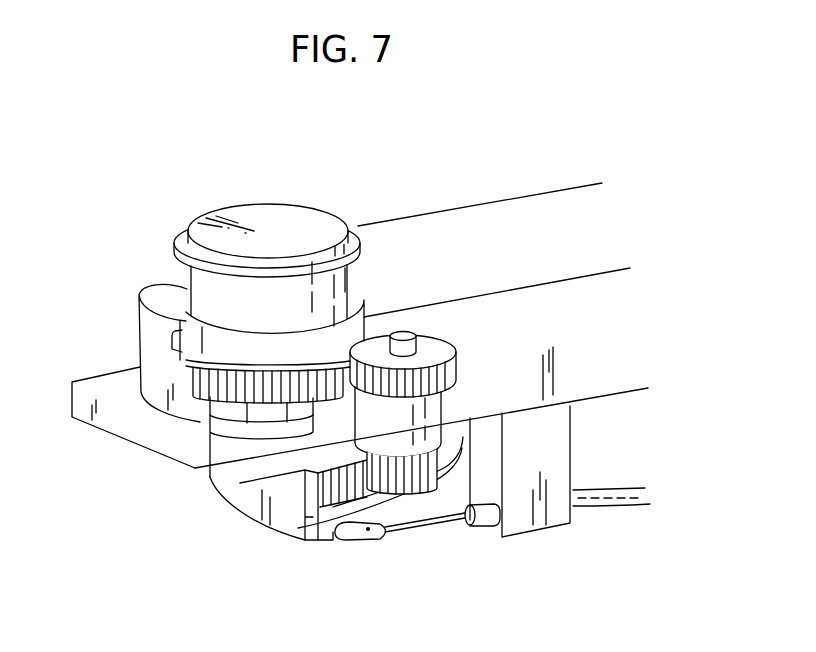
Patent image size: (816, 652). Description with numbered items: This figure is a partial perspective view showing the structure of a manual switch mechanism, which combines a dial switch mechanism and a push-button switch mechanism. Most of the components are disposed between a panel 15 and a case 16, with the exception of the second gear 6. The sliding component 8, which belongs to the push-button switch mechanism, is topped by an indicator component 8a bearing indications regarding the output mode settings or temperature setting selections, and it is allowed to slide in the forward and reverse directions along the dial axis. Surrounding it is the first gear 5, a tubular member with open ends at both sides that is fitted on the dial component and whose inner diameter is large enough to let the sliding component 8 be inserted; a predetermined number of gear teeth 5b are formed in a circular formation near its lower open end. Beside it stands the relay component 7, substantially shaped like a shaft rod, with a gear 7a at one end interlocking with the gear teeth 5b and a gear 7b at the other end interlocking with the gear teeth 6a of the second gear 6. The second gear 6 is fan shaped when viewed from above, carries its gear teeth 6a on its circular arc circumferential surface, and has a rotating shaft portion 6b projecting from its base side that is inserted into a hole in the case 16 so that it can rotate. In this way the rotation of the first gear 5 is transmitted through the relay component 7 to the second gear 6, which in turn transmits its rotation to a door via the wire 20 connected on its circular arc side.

The first gear 5 is at (190, 350).
The gear teeth 5b is at (220, 387).
The second gear 6 is at (247, 511).
The gear teeth 6a is at (346, 534).
The rotating shaft portion 6b is at (257, 415).
The relay component 7 is at (440, 407).
The gear 7a is at (450, 370).
The gear 7b is at (408, 497).
The sliding component 8 is at (176, 292).
The indicator component 8a is at (252, 225).
The panel 15 is at (453, 224).
The case 16 is at (120, 420).
The wire 20 is at (598, 508).